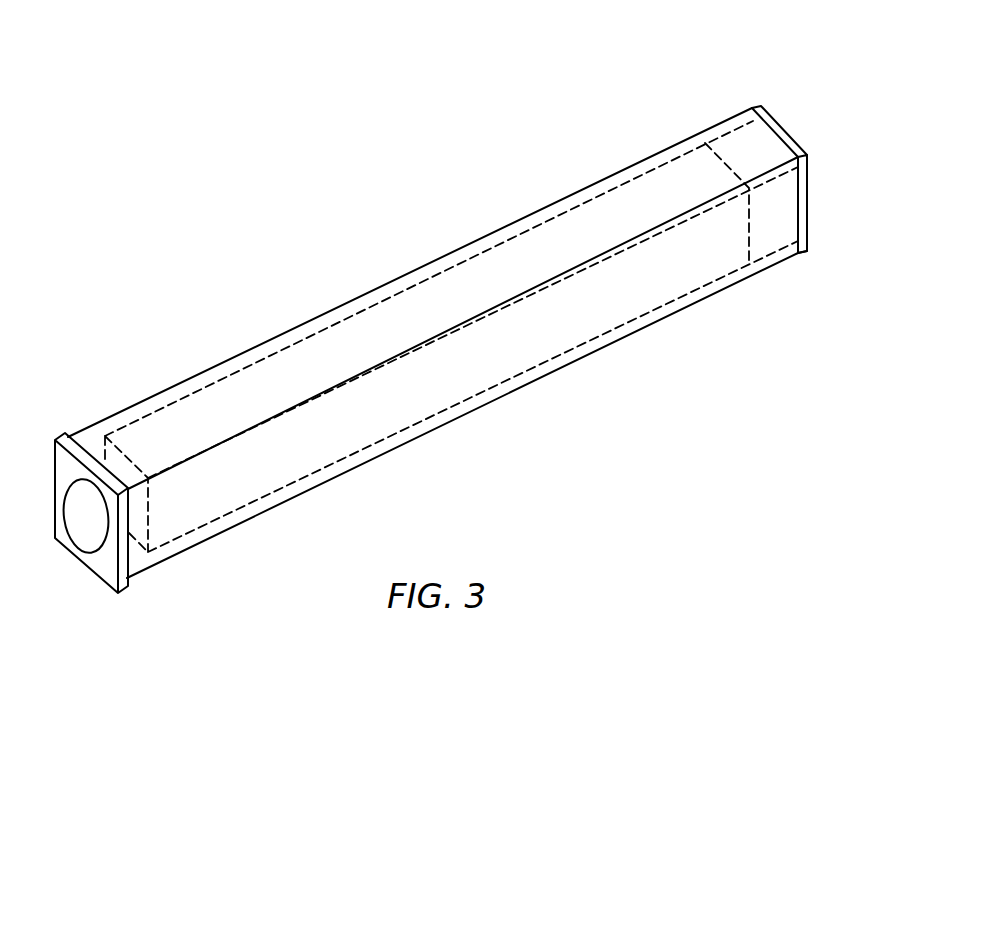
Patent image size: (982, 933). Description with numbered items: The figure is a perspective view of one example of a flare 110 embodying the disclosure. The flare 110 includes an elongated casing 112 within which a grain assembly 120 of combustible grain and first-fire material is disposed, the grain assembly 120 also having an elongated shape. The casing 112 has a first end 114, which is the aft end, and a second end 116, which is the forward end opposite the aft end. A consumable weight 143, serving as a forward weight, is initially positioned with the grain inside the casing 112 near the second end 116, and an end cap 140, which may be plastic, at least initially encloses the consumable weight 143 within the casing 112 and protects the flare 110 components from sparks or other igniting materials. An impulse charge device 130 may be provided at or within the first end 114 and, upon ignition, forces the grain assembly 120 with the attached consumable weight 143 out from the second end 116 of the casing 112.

The flare 110 is at (441, 341).
The casing 112 is at (365, 313).
The first end 114 is at (69, 509).
The second end 116 is at (790, 122).
The grain assembly 120 is at (575, 305).
The impulse charge device 130 is at (87, 518).
The end cap 140 is at (807, 233).
The consumable weight 143 is at (742, 150).